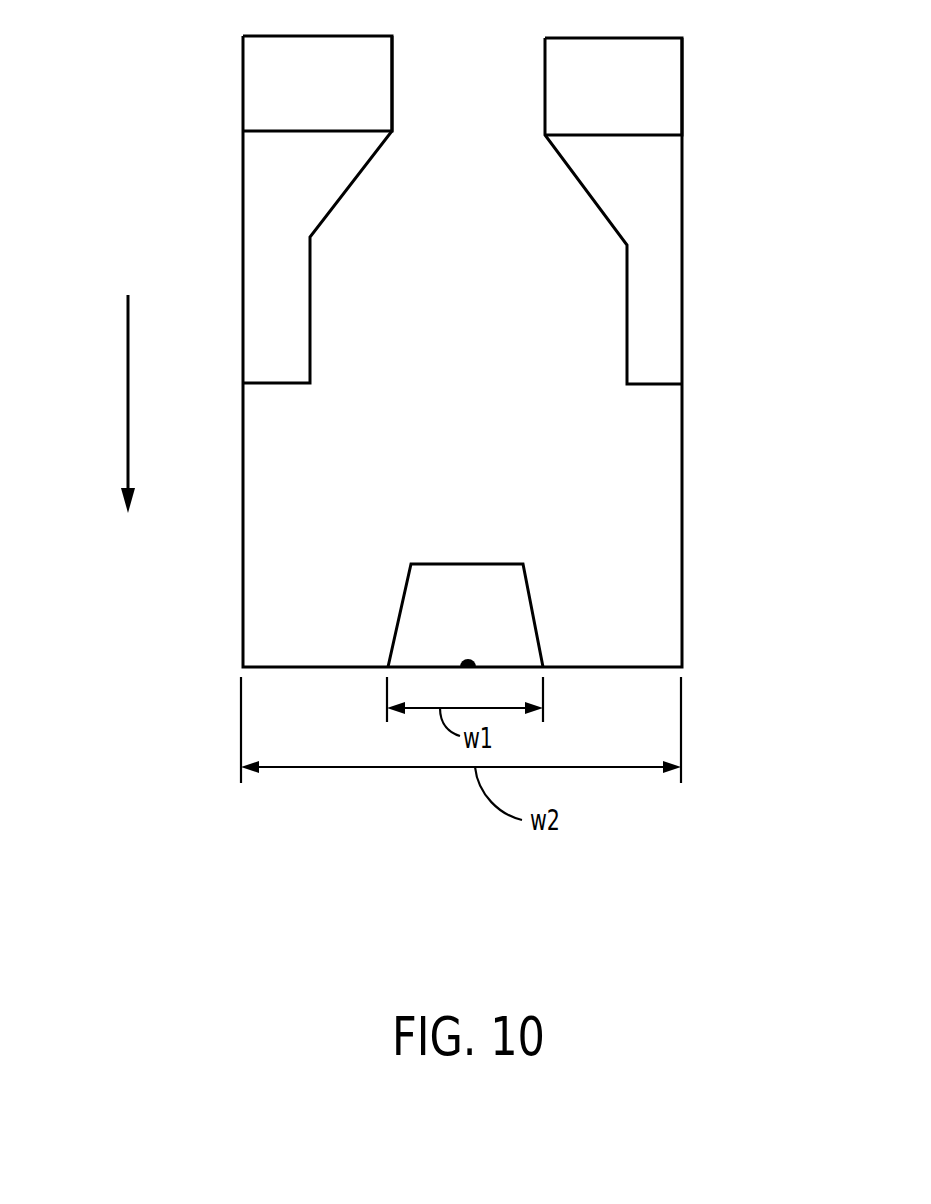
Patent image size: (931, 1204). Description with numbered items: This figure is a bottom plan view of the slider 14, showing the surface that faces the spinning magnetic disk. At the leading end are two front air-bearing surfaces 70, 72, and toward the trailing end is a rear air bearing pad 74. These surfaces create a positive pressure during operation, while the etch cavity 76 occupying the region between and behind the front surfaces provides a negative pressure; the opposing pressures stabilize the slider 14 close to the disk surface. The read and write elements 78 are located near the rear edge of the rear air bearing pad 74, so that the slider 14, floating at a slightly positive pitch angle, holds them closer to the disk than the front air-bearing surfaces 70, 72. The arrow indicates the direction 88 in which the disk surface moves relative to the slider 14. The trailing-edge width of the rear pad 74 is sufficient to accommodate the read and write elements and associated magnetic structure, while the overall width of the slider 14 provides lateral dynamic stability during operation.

The slider 14 is at (765, 181).
The front air-bearing surface 70 is at (345, 77).
The front air-bearing surface 72 is at (640, 97).
The rear air bearing pad 74 is at (502, 621).
The etch cavity 76 is at (569, 472).
The read and write elements 78 is at (474, 661).
The direction 88 is at (128, 400).